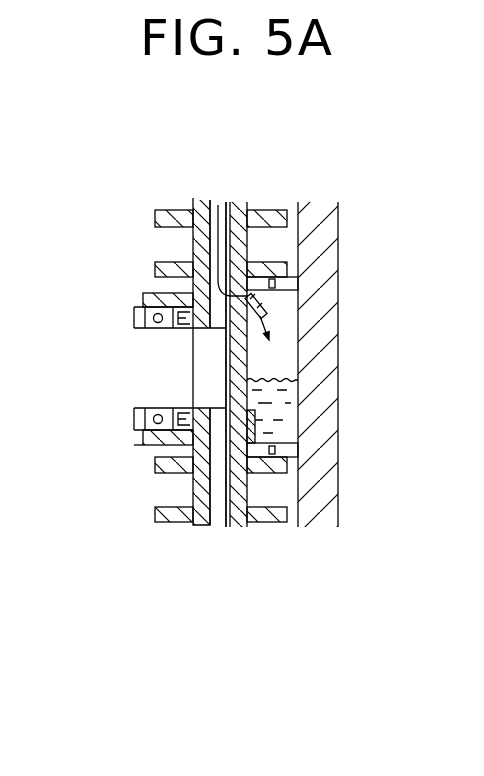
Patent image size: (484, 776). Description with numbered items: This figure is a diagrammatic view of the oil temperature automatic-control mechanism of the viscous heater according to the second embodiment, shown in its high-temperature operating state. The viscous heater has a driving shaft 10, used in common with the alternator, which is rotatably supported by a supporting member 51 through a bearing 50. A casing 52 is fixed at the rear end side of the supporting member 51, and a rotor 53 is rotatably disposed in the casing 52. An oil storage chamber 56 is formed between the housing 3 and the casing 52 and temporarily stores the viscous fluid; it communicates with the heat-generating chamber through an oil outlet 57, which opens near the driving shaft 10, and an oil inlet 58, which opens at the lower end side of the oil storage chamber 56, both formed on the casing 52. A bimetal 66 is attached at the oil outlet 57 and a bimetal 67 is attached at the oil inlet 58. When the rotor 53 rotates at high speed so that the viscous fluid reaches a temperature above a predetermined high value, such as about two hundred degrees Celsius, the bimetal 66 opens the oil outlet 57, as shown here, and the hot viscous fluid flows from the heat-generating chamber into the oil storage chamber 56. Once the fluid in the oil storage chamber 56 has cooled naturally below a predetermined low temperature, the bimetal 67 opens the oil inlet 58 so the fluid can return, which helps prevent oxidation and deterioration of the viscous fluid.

The housing 3 is at (338, 380).
The driving shaft 10 is at (160, 372).
The bearing 50 is at (140, 316).
The supporting member 51 is at (145, 297).
The casing 52 is at (196, 525).
The rotor 53 is at (219, 526).
The oil storage chamber 56 is at (290, 333).
The oil outlet 57 is at (218, 205).
The oil inlet 58 is at (248, 526).
The bimetal 66 is at (270, 303).
The bimetal 67 is at (253, 413).